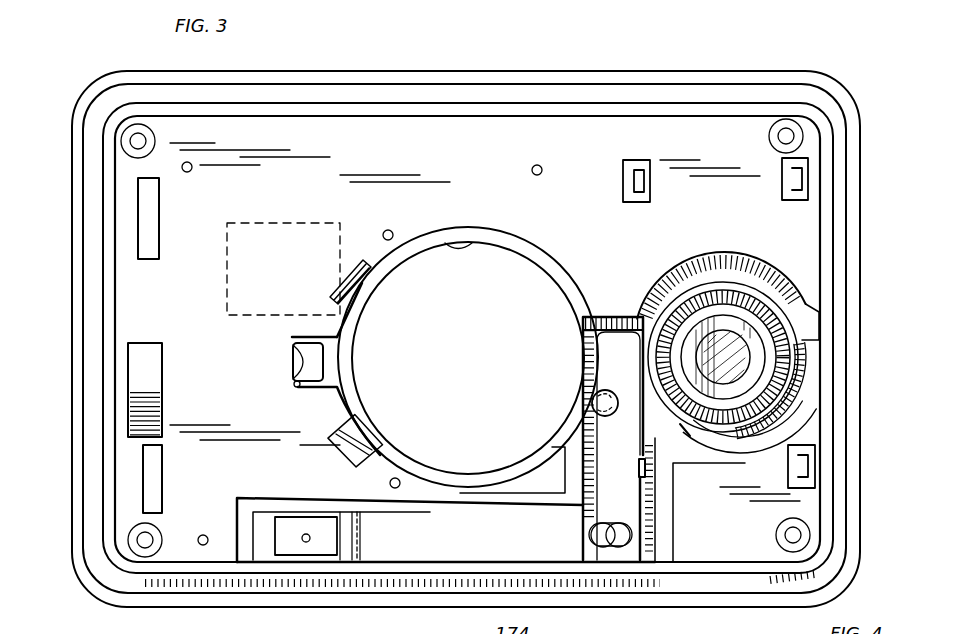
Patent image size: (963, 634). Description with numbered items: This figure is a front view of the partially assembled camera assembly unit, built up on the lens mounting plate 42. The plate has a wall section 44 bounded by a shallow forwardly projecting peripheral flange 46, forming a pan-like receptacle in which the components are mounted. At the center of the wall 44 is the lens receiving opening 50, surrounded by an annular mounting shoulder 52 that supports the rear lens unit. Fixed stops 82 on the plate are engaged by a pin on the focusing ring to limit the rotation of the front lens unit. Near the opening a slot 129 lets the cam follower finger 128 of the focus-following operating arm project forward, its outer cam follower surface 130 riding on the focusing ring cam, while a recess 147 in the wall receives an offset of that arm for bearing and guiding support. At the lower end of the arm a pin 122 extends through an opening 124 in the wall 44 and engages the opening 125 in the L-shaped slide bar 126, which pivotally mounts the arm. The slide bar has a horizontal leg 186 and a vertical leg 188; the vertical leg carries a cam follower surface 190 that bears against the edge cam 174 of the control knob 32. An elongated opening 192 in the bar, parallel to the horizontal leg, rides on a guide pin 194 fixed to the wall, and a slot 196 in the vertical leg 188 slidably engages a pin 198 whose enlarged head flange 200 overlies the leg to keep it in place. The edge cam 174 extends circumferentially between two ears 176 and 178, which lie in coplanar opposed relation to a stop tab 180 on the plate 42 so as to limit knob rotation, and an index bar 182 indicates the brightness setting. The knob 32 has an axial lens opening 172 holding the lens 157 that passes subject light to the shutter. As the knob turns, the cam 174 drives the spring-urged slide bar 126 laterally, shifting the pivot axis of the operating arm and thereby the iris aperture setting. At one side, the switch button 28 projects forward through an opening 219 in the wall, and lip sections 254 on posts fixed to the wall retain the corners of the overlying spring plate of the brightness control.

The lens mounting plate 42 is at (862, 196).
The wall section 44 is at (465, 338).
The forwardly projecting peripheral flange 46 is at (473, 108).
The central lens receiving opening 50 is at (480, 242).
The annular mounting shoulder 52 is at (542, 264).
The fixed stops 82 is at (345, 282).
The recess 147 is at (296, 240).
The cam follower finger 128 is at (293, 352).
The cam follower surface 130 is at (300, 368).
The slot 129 is at (297, 385).
The opening 219 is at (140, 364).
The button 28 is at (140, 405).
The horizontal leg 186 is at (446, 439).
The cam follower surface 190 is at (636, 320).
The vertical leg 188 is at (622, 470).
The opening 124 is at (262, 525).
The pin 122 is at (309, 538).
The opening 125 is at (306, 540).
The slide bar 126 is at (362, 560).
The guide pin 194 is at (603, 547).
The elongated opening 192 is at (620, 545).
The enlarged head flange 200 is at (603, 392).
The slot 196 is at (595, 393).
The pin 198 is at (590, 408).
The control knob 32 is at (700, 266).
The edge cam 174 is at (660, 290).
The ear 176 is at (790, 312).
The stop tab 180 is at (810, 330).
The index bar 182 is at (778, 344).
The axial lens opening 172 is at (727, 330).
The lens 157 is at (738, 343).
The ear 178 is at (690, 436).
The lip sections 254 is at (630, 178).